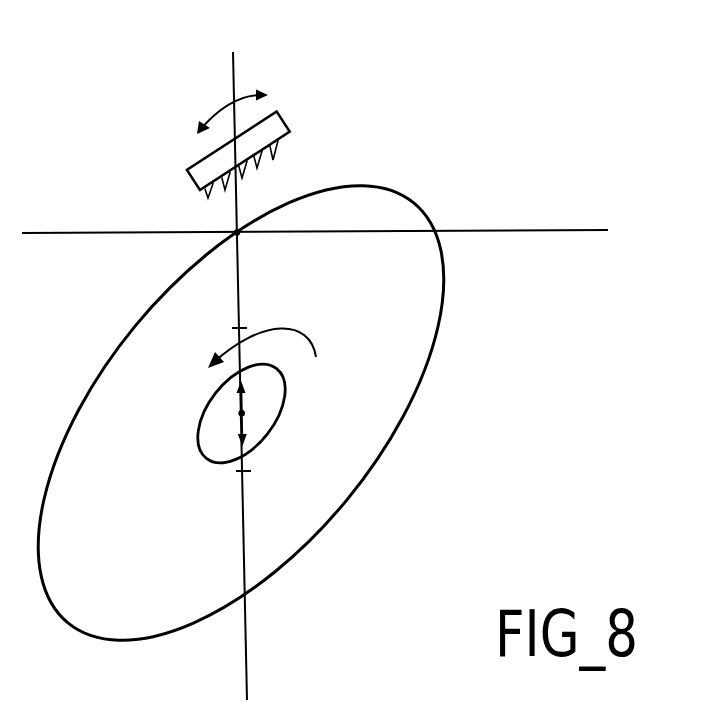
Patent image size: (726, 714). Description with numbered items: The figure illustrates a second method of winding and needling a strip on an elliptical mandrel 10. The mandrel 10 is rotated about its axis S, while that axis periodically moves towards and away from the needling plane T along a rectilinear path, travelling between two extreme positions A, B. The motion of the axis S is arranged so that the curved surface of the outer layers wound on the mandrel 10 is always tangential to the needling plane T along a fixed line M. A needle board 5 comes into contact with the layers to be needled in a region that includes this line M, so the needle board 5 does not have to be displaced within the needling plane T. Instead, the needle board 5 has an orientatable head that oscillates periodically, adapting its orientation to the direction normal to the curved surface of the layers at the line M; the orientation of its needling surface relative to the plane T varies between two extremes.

The needle board 5 is at (270, 130).
The elliptical mandrel 10 is at (285, 403).
The needling plane T is at (590, 230).
The fixed line M is at (252, 250).
The mandrel axis S is at (236, 414).
The first extreme A is at (256, 483).
The second extreme B is at (251, 307).